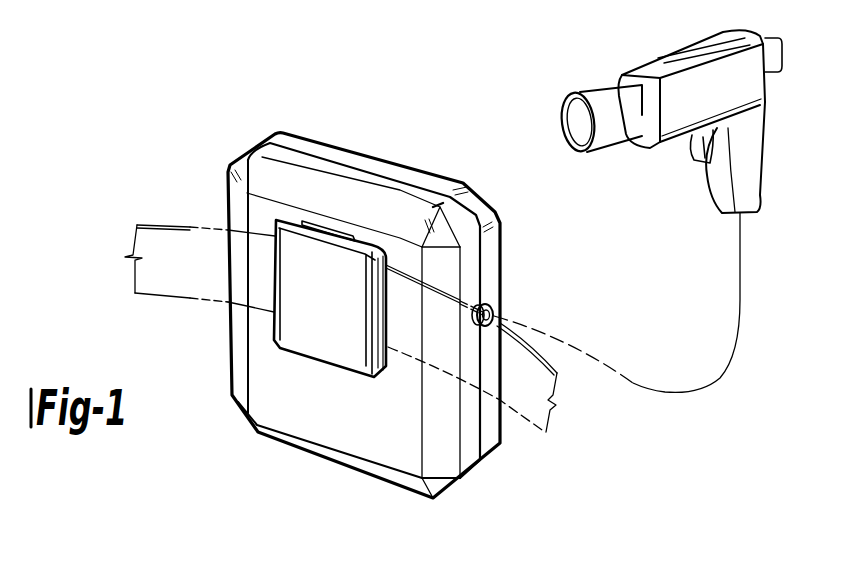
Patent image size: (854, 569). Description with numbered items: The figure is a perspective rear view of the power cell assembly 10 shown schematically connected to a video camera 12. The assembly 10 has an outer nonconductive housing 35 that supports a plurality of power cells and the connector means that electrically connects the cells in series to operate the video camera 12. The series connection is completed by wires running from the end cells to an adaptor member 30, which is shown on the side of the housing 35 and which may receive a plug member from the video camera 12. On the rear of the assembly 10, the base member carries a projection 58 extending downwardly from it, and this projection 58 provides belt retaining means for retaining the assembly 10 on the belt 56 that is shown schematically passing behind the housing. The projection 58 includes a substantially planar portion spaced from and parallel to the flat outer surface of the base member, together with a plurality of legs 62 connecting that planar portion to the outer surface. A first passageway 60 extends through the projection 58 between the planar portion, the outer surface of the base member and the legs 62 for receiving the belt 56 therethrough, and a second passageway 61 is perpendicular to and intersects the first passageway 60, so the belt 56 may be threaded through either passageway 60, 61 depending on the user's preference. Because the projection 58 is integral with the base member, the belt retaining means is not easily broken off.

The power cell assembly 10 is at (272, 110).
The video camera 12 is at (676, 11).
The adaptor member 30 is at (492, 302).
The outer nonconductive housing 35 is at (400, 167).
The belt 56 is at (188, 238).
The projection 58 is at (347, 352).
The first passageway 60 is at (380, 317).
The second passageway 61 is at (305, 223).
The legs 62 is at (388, 262).